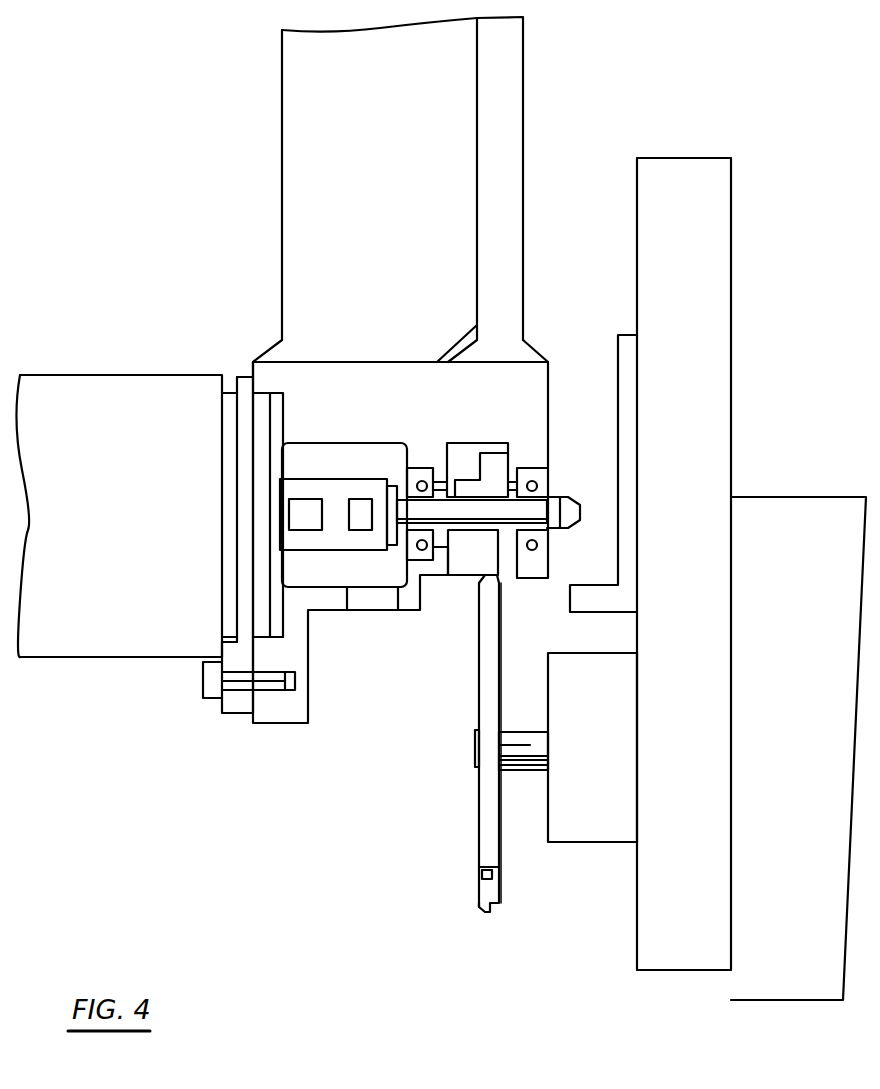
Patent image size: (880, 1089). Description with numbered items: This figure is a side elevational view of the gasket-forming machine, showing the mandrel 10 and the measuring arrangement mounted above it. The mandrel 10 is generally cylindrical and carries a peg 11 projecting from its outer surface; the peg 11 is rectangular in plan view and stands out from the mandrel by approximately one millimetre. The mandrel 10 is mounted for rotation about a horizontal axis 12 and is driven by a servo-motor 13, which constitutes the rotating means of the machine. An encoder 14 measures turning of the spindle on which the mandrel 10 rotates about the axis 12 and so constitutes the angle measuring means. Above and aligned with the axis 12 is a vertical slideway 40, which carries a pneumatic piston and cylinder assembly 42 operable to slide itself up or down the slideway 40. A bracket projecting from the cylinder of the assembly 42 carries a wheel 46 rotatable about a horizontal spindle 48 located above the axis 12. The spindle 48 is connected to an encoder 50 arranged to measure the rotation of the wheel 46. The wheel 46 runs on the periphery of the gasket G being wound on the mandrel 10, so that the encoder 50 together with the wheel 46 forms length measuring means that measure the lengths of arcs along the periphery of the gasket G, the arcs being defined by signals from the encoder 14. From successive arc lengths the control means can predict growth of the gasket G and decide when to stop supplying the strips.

The mandrel 10 is at (485, 848).
The peg 11 is at (480, 881).
The spiral gasket G is at (478, 898).
The horizontal axis 12 is at (527, 733).
The servo-motor 13 is at (747, 992).
The encoder 14 is at (588, 850).
The vertical slideway 40 is at (526, 90).
The pneumatic piston and cylinder assembly 42 is at (300, 155).
The wheel 46 is at (497, 462).
The horizontal spindle 48 is at (462, 510).
The encoder 50 is at (157, 377).